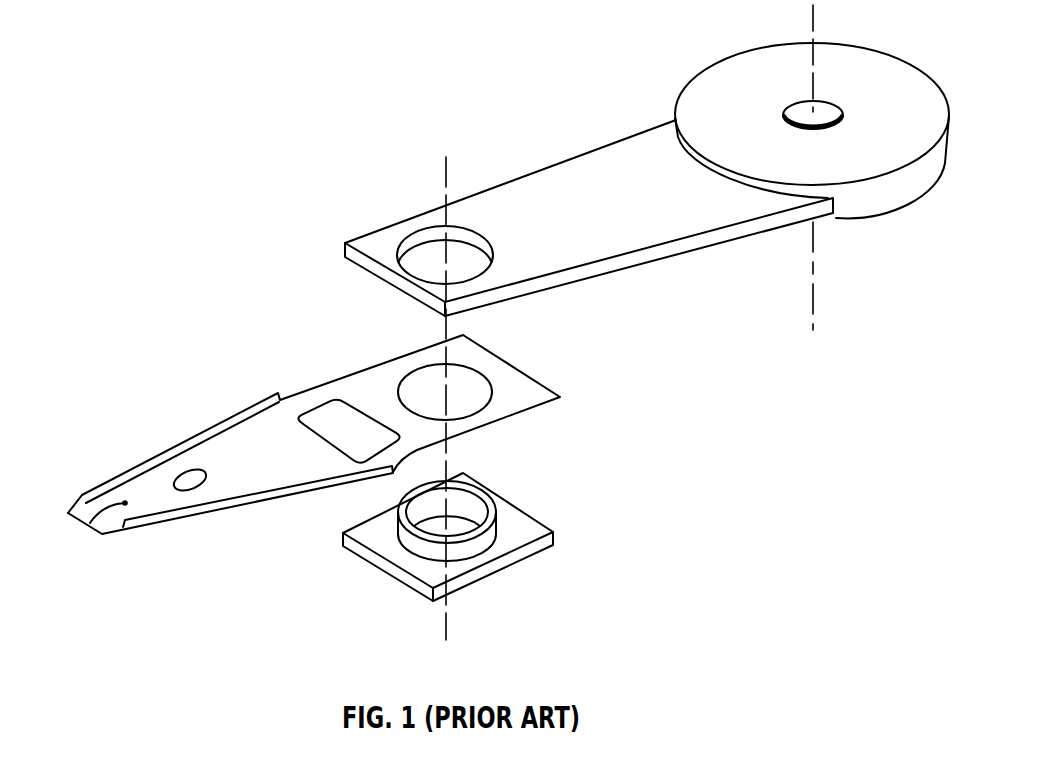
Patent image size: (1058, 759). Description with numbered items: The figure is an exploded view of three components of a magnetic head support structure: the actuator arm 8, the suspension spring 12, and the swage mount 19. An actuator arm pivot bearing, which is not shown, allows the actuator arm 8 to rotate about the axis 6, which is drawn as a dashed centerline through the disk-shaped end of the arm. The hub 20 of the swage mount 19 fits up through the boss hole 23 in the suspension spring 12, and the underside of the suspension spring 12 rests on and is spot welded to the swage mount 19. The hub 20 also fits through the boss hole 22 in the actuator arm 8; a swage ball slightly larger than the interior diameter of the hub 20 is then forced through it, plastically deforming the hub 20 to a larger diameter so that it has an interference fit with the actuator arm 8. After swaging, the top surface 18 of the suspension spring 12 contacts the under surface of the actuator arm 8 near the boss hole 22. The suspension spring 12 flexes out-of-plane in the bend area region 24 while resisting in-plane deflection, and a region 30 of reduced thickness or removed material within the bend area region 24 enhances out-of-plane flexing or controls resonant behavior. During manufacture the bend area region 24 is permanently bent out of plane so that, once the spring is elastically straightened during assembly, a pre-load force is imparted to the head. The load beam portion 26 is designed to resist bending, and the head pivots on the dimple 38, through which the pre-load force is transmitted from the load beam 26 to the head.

The axis 6 is at (813, 15).
The actuator arm 8 is at (565, 170).
The boss hole 22 is at (418, 243).
The suspension spring 12 is at (537, 383).
The top surface 18 is at (489, 421).
The boss hole 23 is at (420, 366).
The bend area region 24 is at (303, 402).
The region of reduced thickness or removed material 30 is at (337, 398).
The load beam portion 26 is at (212, 497).
The dimple 38 is at (84, 525).
The swage mount 19 is at (527, 523).
The hub 20 is at (471, 547).